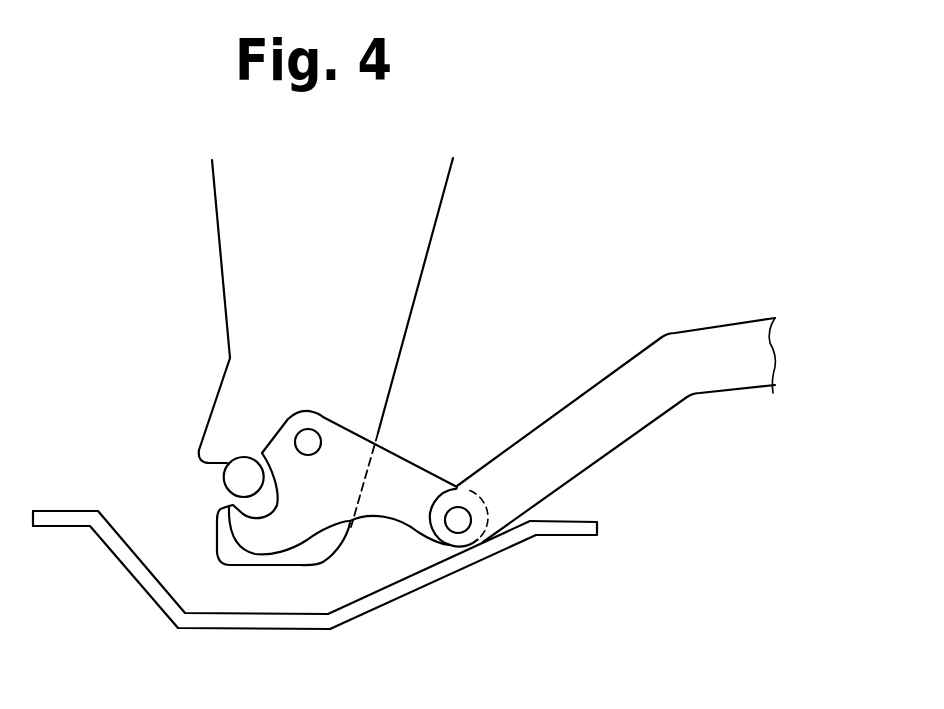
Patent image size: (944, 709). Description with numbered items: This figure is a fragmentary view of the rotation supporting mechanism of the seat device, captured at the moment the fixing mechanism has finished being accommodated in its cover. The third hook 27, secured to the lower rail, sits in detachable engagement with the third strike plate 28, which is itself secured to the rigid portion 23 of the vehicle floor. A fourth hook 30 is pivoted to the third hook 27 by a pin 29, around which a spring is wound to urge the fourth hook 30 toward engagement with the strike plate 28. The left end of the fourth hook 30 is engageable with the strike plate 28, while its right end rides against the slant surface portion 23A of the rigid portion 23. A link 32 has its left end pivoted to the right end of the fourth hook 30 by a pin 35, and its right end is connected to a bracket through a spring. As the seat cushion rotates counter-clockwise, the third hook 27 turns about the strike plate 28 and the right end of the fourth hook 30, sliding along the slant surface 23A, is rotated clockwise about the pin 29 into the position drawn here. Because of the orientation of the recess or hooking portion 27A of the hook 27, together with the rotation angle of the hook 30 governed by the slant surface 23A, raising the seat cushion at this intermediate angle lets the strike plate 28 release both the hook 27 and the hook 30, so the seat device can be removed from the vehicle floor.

The rigid portion 23 is at (60, 520).
The slant surface portion 23A is at (437, 573).
The third hook 27 is at (404, 270).
The recess or hooking portion 27A is at (233, 509).
The third strike plate 28 is at (233, 477).
The pin 29 is at (313, 440).
The fourth hook 30 is at (397, 517).
The link 32 is at (563, 468).
The pin 35 is at (463, 528).